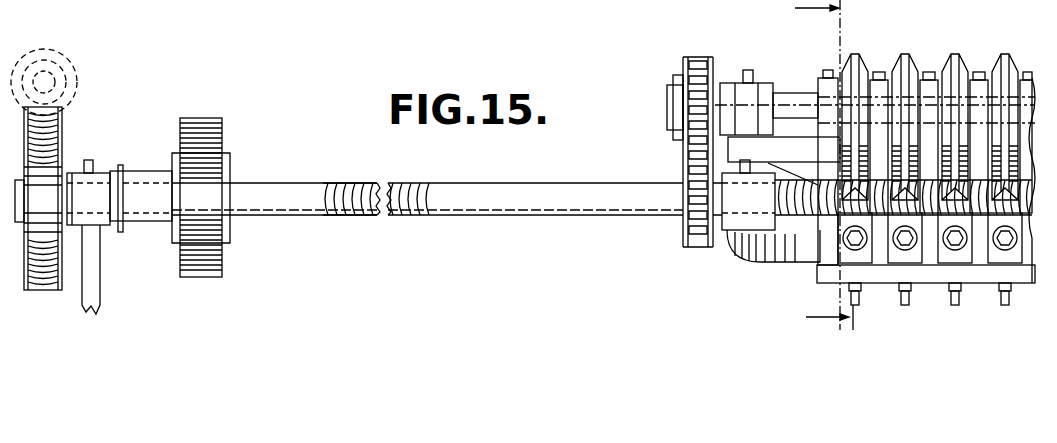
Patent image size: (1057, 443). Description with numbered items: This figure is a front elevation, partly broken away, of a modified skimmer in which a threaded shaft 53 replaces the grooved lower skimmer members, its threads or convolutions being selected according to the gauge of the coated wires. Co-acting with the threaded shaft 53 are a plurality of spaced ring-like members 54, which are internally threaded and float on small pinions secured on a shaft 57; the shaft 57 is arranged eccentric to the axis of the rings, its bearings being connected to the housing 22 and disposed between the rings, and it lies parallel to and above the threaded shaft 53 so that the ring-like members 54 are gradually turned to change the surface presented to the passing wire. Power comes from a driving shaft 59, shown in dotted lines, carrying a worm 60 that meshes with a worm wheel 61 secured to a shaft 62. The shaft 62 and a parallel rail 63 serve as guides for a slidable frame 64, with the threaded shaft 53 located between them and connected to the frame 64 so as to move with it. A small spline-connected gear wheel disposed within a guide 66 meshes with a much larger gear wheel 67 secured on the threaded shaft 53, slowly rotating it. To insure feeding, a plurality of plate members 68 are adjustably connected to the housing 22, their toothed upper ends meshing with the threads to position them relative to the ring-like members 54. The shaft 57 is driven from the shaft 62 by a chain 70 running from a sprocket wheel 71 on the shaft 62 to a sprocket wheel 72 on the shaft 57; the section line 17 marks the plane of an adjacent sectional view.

The section line 17- 17 is at (815, 165).
The housing 22 is at (758, 253).
The threaded shaft 53 is at (347, 215).
The ring-like members 54 is at (903, 67).
The shaft 57 is at (788, 97).
The driving shaft 59 is at (47, 79).
The worm 60 is at (73, 82).
The worm wheel 61 is at (63, 122).
The shaft 62 is at (337, 183).
The rail 63 is at (532, 202).
The frame 64 is at (129, 177).
The guide 66 is at (233, 156).
The gear wheel 67 is at (206, 125).
The plate members 68 is at (903, 255).
The chain 70 is at (680, 145).
The sprocket wheel 71 is at (698, 240).
The sprocket wheel 72 is at (702, 57).